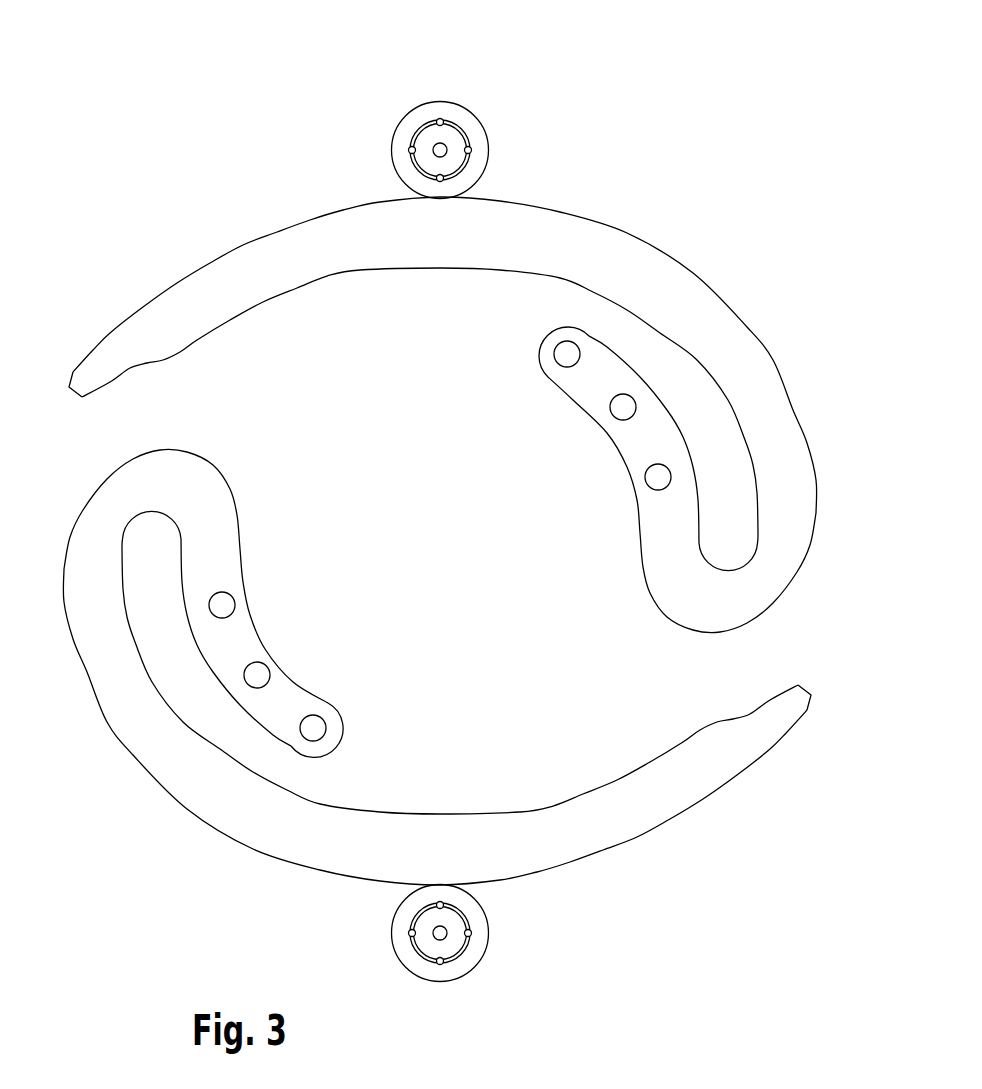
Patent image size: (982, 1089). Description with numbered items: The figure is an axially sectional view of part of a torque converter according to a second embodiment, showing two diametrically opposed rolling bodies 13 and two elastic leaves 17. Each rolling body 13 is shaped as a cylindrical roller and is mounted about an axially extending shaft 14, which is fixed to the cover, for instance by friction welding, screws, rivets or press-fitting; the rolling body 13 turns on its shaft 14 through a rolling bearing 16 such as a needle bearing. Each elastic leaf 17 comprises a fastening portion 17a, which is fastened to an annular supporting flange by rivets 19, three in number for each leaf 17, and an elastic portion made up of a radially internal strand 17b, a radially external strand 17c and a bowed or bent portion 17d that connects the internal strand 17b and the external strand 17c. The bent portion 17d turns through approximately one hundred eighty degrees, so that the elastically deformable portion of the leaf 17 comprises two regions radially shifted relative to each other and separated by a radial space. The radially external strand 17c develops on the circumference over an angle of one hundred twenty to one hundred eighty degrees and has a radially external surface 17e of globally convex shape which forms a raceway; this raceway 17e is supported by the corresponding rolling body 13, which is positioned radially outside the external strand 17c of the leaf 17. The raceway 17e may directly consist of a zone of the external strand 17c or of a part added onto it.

The rolling body 13 is at (477, 544).
The shaft 14 is at (450, 160).
The rolling bearing 16 is at (468, 151).
The elastic leaf 17 is at (445, 558).
The fastening portion 17a is at (640, 438).
The radially internal strand 17b is at (657, 558).
The radially external strand 17c is at (783, 477).
The bowed or bent portion 17d is at (687, 522).
The radially external surface 17e is at (575, 215).
The rivet 19 is at (567, 354).